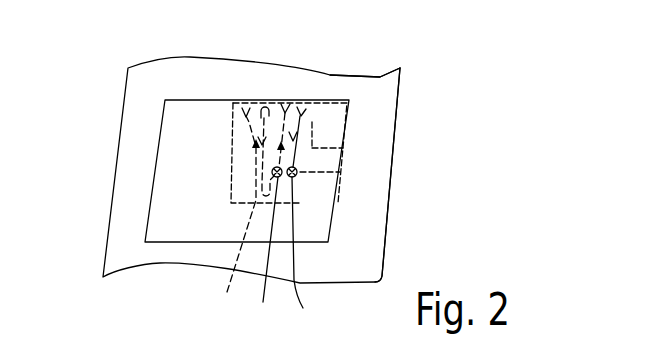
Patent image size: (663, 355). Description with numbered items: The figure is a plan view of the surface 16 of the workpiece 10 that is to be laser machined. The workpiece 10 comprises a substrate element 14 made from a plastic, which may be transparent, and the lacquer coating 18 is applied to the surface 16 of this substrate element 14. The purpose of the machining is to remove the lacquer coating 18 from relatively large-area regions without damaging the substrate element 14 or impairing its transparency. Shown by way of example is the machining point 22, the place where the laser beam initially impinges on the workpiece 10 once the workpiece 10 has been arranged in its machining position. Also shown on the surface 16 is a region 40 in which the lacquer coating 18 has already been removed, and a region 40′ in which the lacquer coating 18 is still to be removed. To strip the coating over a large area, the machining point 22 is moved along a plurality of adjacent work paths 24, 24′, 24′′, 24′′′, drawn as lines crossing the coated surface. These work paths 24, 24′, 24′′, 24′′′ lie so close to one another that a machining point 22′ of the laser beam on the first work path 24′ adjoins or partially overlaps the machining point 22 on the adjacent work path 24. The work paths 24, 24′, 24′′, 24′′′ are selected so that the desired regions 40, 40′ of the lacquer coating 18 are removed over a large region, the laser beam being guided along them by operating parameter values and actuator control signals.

The workpiece 10 is at (430, 192).
The substrate element 14 is at (395, 148).
The surface 16 is at (378, 93).
The lacquer coating 18 is at (320, 222).
The machining point 22 is at (301, 225).
The machining point 22′ is at (266, 224).
The work path 24 is at (302, 113).
The work path 24′ is at (286, 110).
The work path 24′′ is at (264, 106).
The work path 24′′′ is at (245, 114).
The region 40 is at (289, 153).
The region 40′ is at (234, 225).